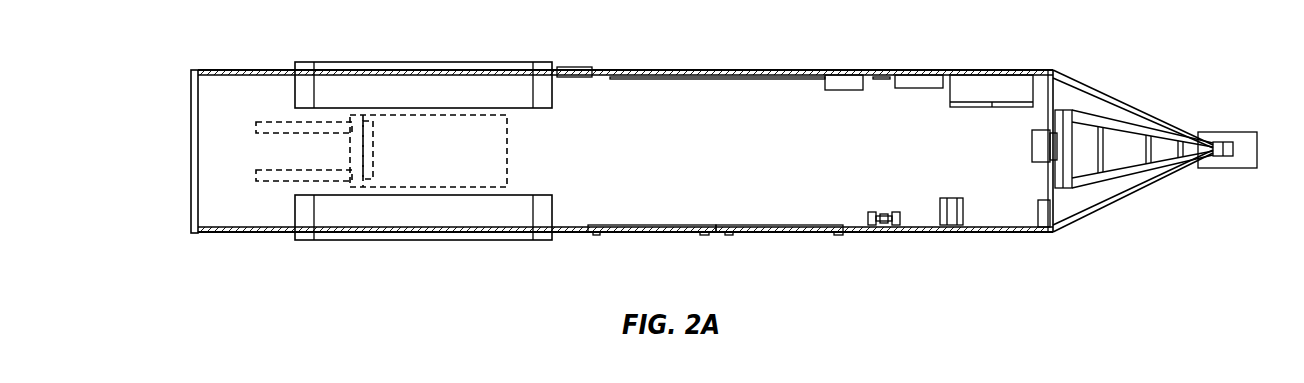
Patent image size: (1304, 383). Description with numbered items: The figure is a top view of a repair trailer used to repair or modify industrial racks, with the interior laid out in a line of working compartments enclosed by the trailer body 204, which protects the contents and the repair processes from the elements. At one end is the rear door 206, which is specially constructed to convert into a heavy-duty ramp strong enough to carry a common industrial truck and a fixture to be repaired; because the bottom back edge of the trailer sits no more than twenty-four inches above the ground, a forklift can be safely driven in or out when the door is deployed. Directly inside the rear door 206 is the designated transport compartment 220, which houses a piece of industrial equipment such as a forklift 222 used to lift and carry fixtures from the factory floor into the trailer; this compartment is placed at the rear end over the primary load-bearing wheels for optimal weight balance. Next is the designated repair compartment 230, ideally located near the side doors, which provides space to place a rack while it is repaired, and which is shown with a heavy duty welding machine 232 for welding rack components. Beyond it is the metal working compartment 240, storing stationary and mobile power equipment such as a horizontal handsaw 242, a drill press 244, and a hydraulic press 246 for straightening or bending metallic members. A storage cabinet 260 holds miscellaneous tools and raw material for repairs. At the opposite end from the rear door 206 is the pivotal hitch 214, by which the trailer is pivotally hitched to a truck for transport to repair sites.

The trailer body 204 is at (240, 72).
The rear door 206 is at (195, 148).
The pivotal hitch 214 is at (1228, 132).
The transport compartment 220 is at (529, 143).
The forklift 222 is at (454, 161).
The repair compartment 230 is at (702, 161).
The heavy duty welding machine 232 is at (845, 82).
The metal working compartment 240 is at (974, 161).
The horizontal handsaw 242 is at (915, 80).
The drill press 244 is at (958, 227).
The hydraulic press 246 is at (892, 227).
The storage cabinet 260 is at (988, 78).